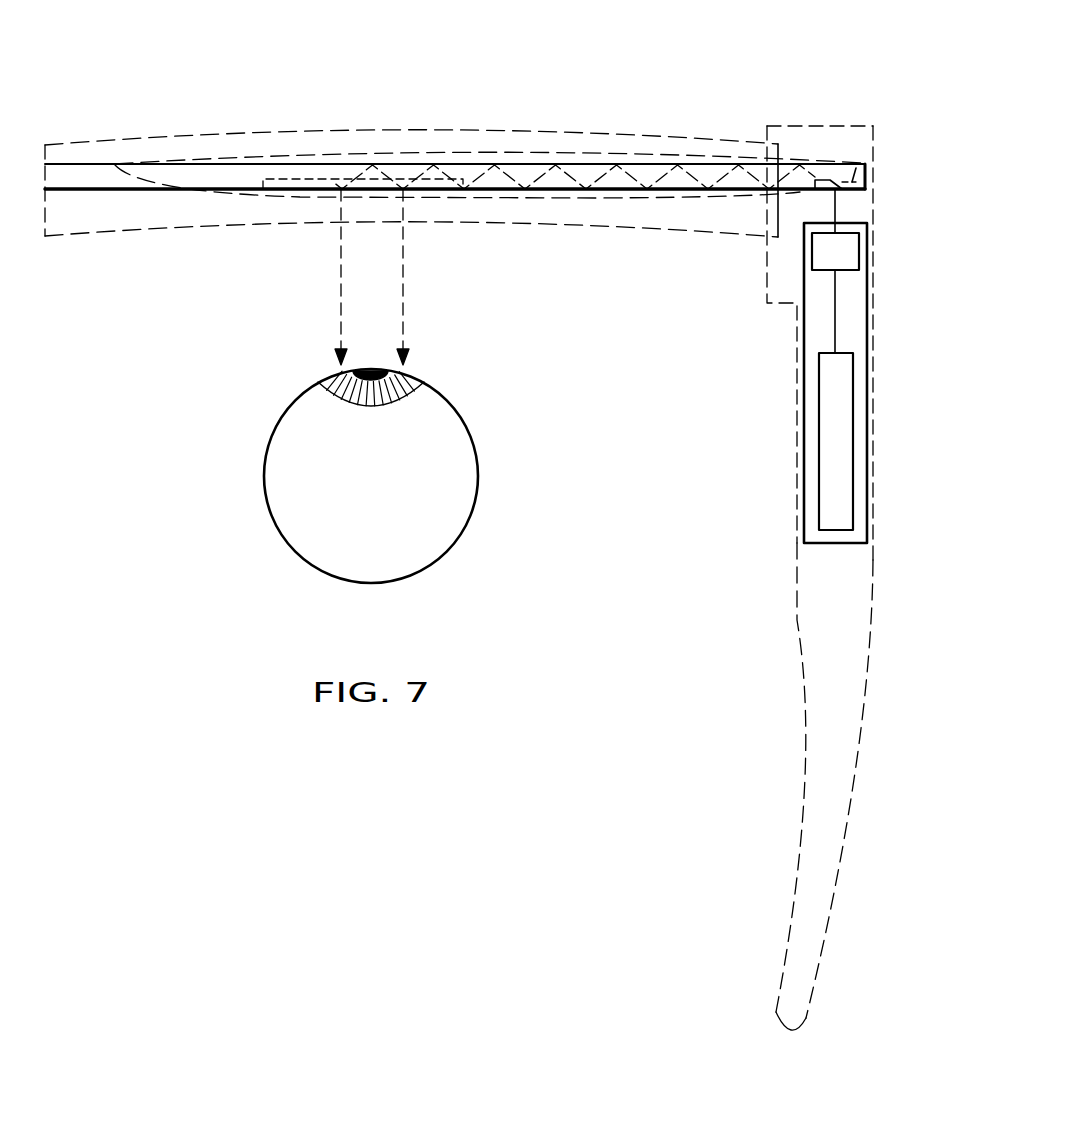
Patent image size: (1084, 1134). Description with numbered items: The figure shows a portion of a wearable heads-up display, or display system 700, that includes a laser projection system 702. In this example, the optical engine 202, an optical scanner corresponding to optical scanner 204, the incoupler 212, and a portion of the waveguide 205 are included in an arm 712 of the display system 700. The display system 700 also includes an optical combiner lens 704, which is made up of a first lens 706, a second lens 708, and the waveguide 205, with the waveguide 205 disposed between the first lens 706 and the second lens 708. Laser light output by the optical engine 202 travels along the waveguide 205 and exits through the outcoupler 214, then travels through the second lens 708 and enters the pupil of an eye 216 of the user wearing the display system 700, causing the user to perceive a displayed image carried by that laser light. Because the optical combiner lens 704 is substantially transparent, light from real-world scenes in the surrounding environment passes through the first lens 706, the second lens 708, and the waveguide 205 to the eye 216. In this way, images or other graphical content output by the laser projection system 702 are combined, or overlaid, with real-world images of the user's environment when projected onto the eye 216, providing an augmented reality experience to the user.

The display system (WHUD) 700 is at (411, 145).
The laser projection system 702 is at (786, 322).
The optical combiner lens 704 is at (552, 131).
The first lens 706 is at (645, 135).
The second lens 708 is at (178, 228).
The arm 712 is at (876, 607).
The waveguide 205 is at (236, 170).
The incoupler 212 is at (858, 163).
The outcoupler 214 is at (318, 182).
The eye 216 is at (270, 522).
The optical scanner 204 is at (843, 248).
The optical engine 202 is at (843, 452).